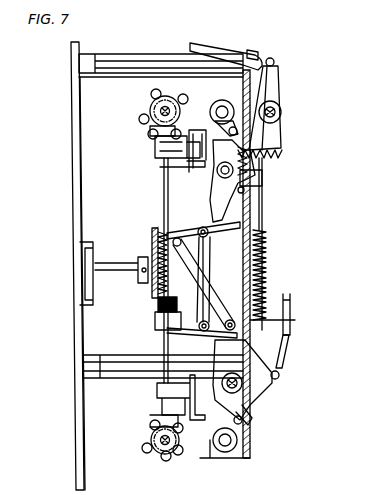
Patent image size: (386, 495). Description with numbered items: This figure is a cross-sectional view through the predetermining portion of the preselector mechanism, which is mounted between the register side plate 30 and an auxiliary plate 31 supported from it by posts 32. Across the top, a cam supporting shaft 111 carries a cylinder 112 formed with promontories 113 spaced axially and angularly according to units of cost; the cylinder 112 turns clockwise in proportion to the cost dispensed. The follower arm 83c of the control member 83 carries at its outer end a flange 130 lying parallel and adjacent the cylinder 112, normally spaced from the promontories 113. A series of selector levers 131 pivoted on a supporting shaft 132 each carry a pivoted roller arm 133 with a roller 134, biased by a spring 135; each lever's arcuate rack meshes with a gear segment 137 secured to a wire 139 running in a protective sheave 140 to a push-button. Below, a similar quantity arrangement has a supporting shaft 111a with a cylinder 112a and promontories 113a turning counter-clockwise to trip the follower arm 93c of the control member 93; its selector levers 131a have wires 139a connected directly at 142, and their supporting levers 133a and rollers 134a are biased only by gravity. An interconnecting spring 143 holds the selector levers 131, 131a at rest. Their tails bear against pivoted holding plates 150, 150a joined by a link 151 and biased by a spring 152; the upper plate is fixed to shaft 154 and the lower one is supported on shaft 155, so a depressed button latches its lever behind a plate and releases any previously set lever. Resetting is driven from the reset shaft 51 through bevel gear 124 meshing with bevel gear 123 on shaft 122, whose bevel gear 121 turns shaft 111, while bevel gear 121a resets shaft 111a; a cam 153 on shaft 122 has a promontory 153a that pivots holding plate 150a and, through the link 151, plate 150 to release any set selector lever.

The side plate 30 is at (71, 48).
The auxiliary plate 31 is at (251, 431).
The posts 32 is at (101, 54).
The reset shaft 51 is at (95, 266).
The control member 83 is at (160, 147).
The follower arm 83c is at (187, 161).
The control member 93 is at (190, 442).
The follower arm 93c is at (157, 390).
The cam supporting shaft 111 is at (167, 108).
The supporting shaft 111a is at (163, 438).
The cylinder 112 is at (150, 97).
The cylinder 112a is at (163, 458).
The promontories 113 is at (142, 115).
The promontories 113a is at (146, 449).
The bevel gear 121 is at (149, 128).
The bevel gear 121a is at (155, 422).
The shaft 122 is at (164, 178).
The bevel gear 123 is at (158, 302).
The bevel gear 124 is at (152, 231).
The flange 130 is at (198, 140).
The selector levers 131 is at (263, 208).
The selector levers 131a is at (270, 378).
The supporting shaft 132 is at (266, 157).
The roller arm 133 is at (267, 74).
The supporting levers 133a is at (250, 419).
The roller 134 is at (213, 104).
The rollers 134a is at (249, 447).
The spring 135 is at (262, 174).
The gear segment 137 is at (268, 140).
The wires 139 is at (271, 58).
The wires 139a is at (284, 355).
The protective sheaves 140 is at (201, 45).
The connection 142 is at (279, 372).
The interconnecting spring 143 is at (266, 242).
The holding plate 150 is at (160, 228).
The holding plate 150a is at (290, 321).
The link 151 is at (192, 262).
The spring 152 is at (197, 277).
The cam 153 is at (158, 318).
The promontory 153a is at (167, 330).
The shaft 154 is at (197, 222).
The shaft 155 is at (212, 292).